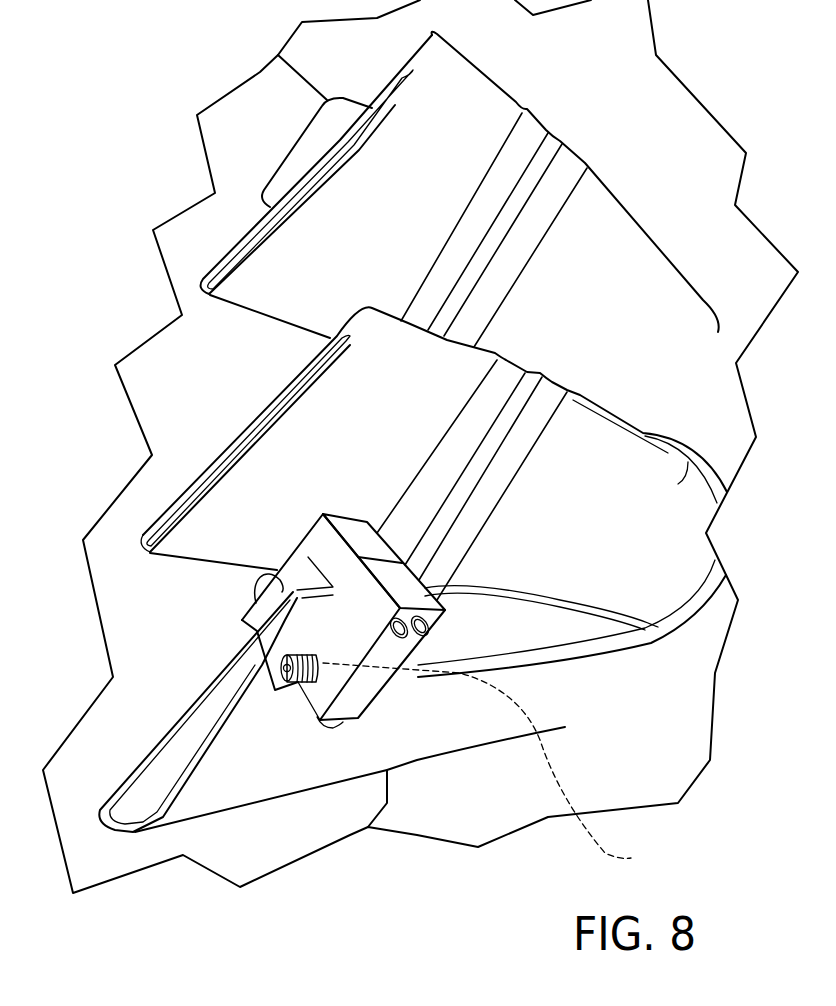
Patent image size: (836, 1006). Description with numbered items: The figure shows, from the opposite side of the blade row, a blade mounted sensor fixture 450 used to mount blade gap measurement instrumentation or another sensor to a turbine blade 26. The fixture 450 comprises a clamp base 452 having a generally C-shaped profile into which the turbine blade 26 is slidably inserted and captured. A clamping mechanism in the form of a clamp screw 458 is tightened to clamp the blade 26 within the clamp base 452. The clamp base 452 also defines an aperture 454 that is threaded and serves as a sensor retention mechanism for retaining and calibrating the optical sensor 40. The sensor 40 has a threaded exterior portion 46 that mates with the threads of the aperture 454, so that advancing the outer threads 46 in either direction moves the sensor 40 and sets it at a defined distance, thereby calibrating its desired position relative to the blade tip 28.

The turbine blade 26 is at (313, 760).
The blade tip 28 is at (160, 820).
The optical sensor 40 is at (262, 655).
The threaded exterior portion 46 is at (287, 664).
The sensor fixture 450 is at (377, 505).
The clamp base 452 is at (388, 600).
The aperture 454 is at (500, 768).
The clamp screw 458 is at (253, 623).